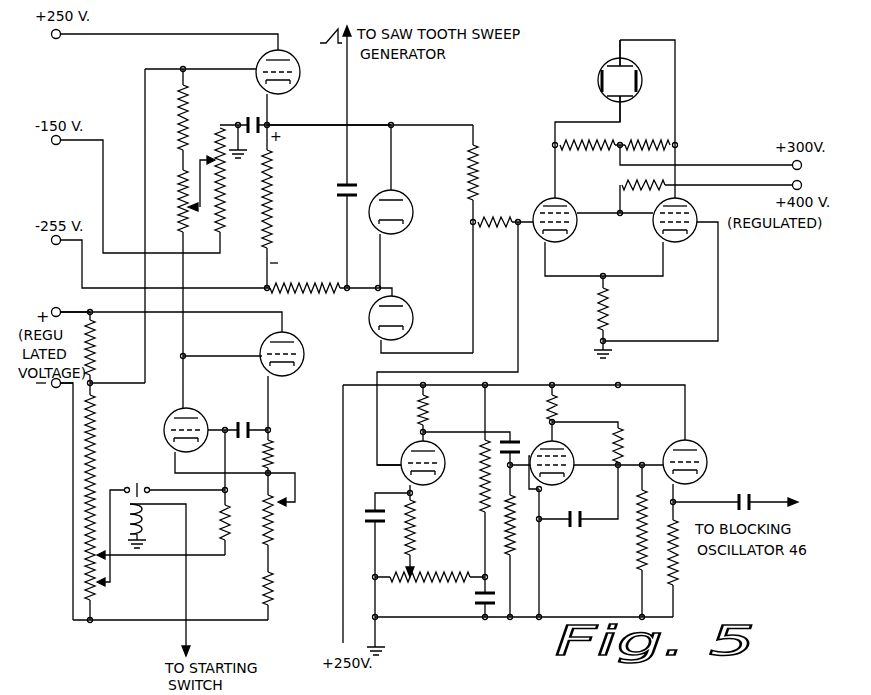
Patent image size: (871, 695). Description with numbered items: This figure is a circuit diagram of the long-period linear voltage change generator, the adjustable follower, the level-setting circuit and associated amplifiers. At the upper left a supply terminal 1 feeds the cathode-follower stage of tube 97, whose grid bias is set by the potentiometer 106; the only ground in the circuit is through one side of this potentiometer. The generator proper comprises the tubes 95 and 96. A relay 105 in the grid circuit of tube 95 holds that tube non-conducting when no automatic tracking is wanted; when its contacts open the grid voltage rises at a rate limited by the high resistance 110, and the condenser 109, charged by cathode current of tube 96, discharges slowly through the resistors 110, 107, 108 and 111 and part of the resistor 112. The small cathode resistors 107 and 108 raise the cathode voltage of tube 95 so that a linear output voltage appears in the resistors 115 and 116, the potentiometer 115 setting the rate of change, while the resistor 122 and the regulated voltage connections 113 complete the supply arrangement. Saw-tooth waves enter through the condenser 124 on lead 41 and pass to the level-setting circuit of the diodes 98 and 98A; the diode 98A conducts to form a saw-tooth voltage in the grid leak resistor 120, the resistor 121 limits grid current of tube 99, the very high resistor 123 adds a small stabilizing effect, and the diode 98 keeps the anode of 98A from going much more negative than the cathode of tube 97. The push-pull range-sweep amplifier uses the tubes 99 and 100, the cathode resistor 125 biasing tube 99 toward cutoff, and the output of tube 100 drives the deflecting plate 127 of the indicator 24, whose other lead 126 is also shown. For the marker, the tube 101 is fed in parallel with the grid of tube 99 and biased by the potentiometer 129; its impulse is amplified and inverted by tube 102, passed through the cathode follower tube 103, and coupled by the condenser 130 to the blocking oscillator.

The +250 V supply terminal 1 is at (49, 35).
The cathode-follower tube 97 is at (301, 80).
The resistor 116 is at (174, 130).
The potentiometer 115 is at (174, 217).
The potentiometer 106 is at (230, 216).
The resistor 122 is at (277, 237).
The lead to saw tooth sweep generator 41 is at (318, 132).
The condenser 124 is at (336, 206).
The diode 98 is at (412, 208).
The diode 98A is at (415, 320).
The grid leak resistor 120 is at (481, 191).
The resistor 121 is at (509, 215).
The resistor 123 is at (288, 284).
The cathode follower tube 96 is at (305, 360).
The tube 95 is at (212, 417).
The condenser 109 is at (231, 424).
The resistor 111 is at (275, 452).
The variable resistor 108 is at (274, 520).
The resistor 107 is at (275, 608).
The high resistance 110 is at (220, 542).
The relay 105 is at (145, 520).
The resistor 112 is at (77, 580).
The regulated voltage terminals 113 is at (65, 412).
The indicator 24 is at (596, 84).
The deflecting plate 127 is at (623, 64).
The regulator tube lead 126 is at (625, 109).
The tube 99 is at (576, 243).
The tube 100 is at (700, 243).
The resistor 125 is at (607, 320).
The tube 101 is at (410, 451).
The tube 102 is at (579, 461).
The tube 103 is at (709, 461).
The potentiometer 129 is at (441, 569).
The condenser 130 is at (756, 484).